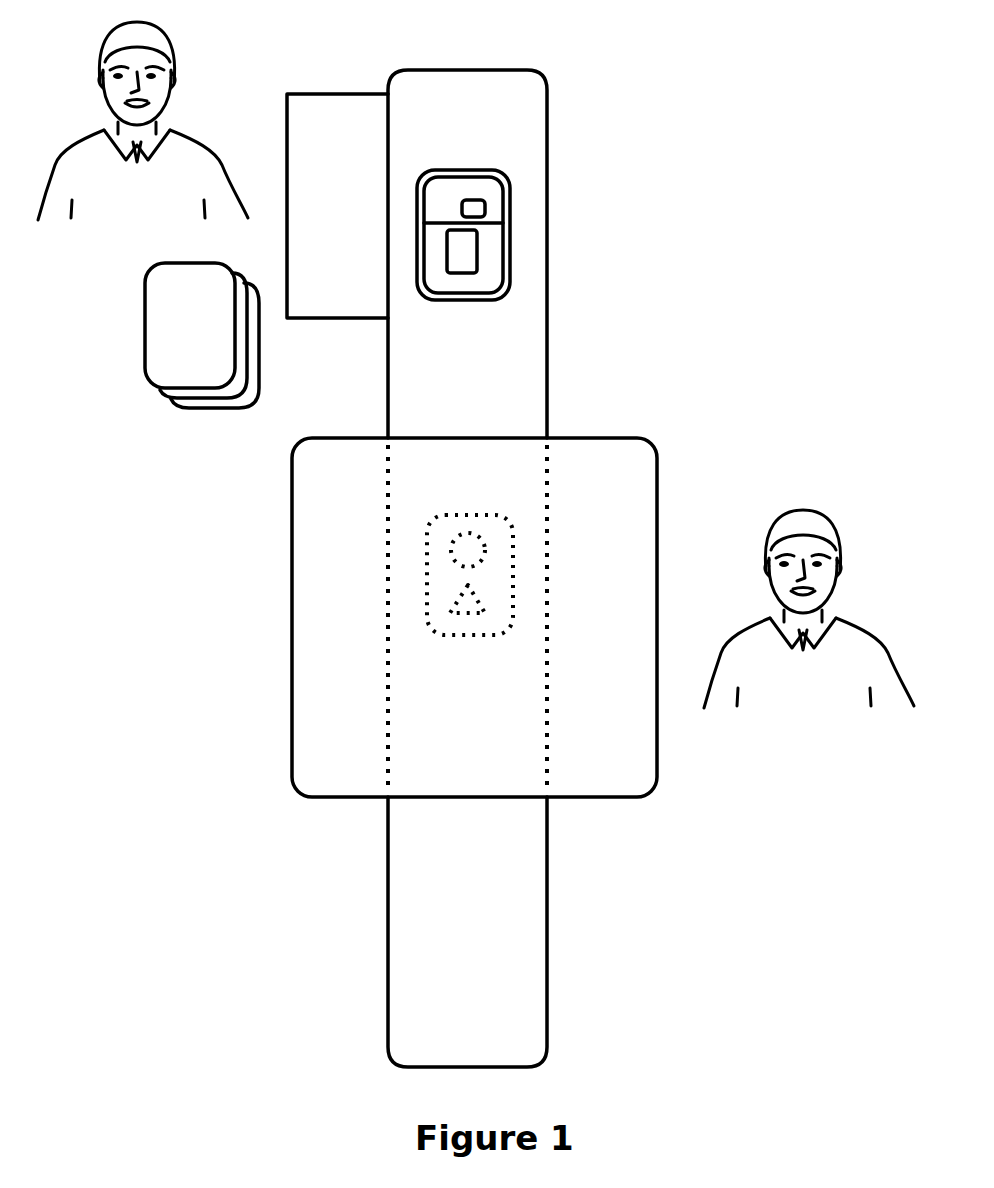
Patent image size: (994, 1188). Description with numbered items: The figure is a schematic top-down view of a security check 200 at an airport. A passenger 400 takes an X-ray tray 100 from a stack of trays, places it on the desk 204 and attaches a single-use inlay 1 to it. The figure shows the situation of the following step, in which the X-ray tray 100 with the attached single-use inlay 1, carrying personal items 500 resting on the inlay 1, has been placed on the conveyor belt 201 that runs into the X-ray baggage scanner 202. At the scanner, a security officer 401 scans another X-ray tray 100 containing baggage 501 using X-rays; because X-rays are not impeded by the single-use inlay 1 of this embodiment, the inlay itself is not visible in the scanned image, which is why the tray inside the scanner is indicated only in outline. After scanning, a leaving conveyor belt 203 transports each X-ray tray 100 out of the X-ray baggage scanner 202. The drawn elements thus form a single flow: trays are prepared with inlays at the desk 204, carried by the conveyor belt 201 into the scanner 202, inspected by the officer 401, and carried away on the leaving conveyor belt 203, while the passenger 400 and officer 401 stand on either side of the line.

The single-use inlay 1 is at (507, 183).
The X-ray tray 100 is at (443, 421).
The security check 200 is at (674, 860).
The conveyor belt 201 is at (503, 370).
The X-ray baggage scanner 202 is at (330, 632).
The leaving conveyor belt 203 is at (465, 963).
The desk 204 is at (355, 142).
The passenger 400 is at (174, 50).
The security officer 401 is at (803, 685).
The personal items 500 is at (453, 240).
The baggage 501 is at (473, 545).